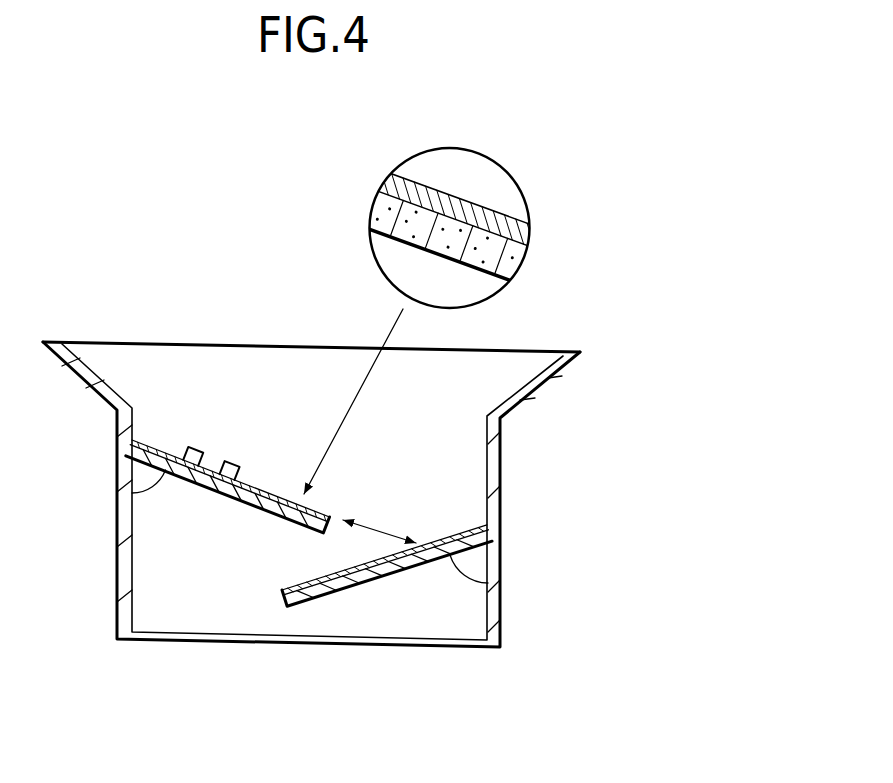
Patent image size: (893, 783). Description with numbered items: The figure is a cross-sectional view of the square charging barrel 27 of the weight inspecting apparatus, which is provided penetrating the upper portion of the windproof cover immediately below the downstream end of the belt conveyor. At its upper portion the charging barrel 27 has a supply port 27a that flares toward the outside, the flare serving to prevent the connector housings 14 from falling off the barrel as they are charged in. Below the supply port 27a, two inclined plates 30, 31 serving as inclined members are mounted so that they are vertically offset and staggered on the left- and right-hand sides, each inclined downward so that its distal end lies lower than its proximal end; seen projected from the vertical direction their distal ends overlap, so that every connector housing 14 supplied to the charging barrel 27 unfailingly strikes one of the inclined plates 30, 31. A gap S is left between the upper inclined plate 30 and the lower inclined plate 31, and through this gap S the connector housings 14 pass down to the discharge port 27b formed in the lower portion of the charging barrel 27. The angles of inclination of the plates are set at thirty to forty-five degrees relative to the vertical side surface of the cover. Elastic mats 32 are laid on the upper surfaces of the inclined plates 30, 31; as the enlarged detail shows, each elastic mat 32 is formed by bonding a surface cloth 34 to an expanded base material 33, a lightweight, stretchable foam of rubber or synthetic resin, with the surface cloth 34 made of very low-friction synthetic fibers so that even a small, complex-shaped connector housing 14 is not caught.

The charging barrel 27 is at (214, 320).
The supply port 27a is at (537, 358).
The discharge port 27b is at (447, 648).
The connector housing 14 is at (232, 457).
The upper inclined plate 30 is at (167, 474).
The lower inclined plate 31 is at (365, 585).
The elastic mat 32 is at (429, 177).
The expanded base material 33 is at (388, 238).
The surface cloth 34 is at (492, 211).
The gap S is at (379, 520).